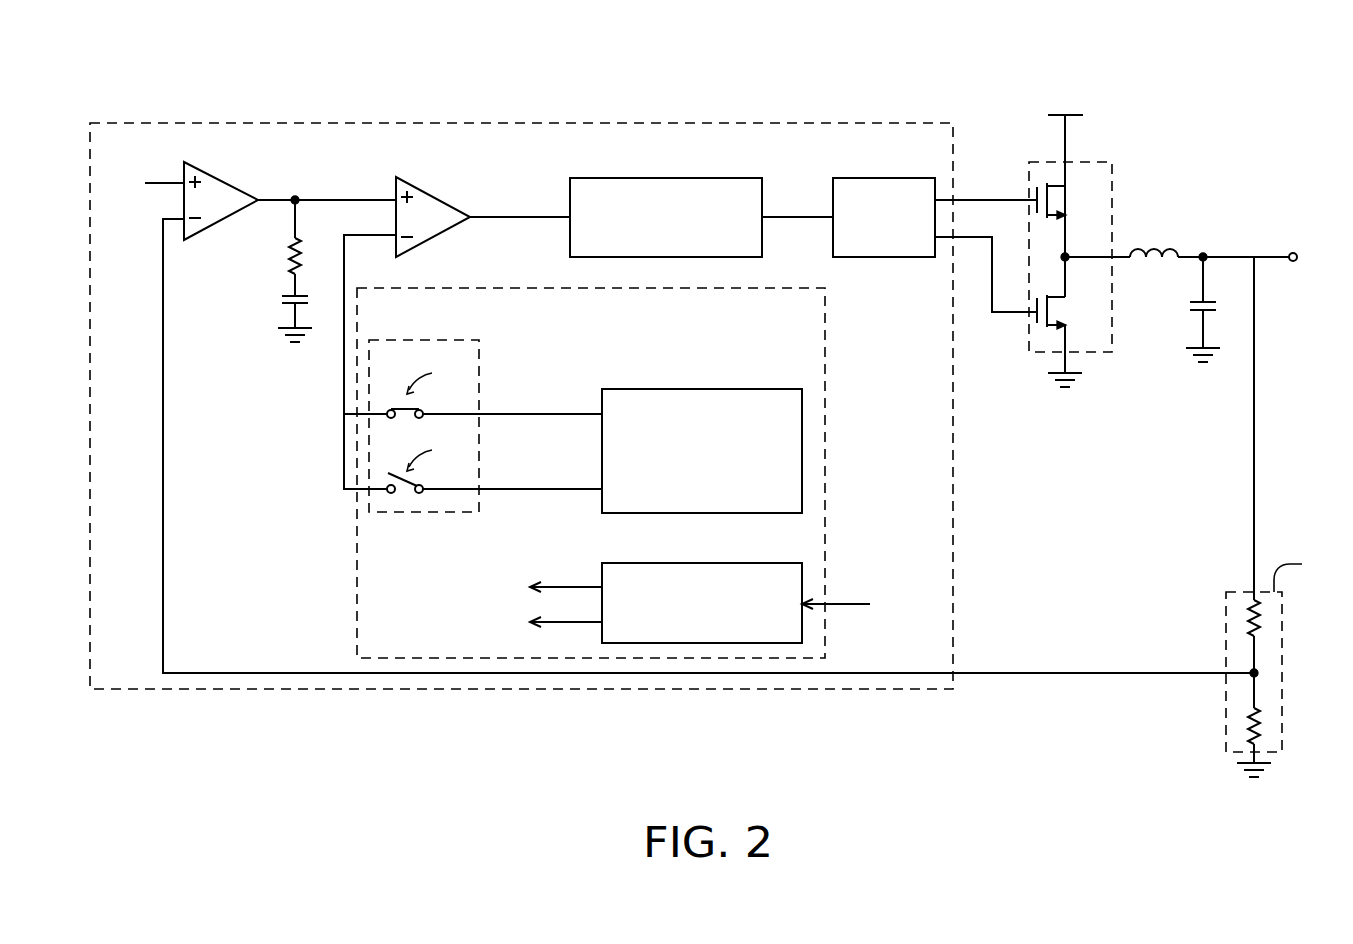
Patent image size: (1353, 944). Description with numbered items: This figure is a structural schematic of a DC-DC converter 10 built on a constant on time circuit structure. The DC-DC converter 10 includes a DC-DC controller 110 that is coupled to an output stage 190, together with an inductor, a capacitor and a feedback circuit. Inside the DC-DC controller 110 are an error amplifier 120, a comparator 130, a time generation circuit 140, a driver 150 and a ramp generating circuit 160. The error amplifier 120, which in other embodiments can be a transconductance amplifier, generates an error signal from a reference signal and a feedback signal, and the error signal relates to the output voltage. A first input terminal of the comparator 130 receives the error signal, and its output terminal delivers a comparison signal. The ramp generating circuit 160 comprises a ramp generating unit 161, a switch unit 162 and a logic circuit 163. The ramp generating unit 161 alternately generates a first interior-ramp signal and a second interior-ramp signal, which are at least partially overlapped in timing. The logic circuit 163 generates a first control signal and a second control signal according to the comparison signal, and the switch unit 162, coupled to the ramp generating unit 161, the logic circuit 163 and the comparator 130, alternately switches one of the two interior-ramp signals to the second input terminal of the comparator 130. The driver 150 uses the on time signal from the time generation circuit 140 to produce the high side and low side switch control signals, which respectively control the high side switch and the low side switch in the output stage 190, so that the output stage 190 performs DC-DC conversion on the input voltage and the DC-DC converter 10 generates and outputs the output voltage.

The DC-DC converter 10 is at (144, 788).
The DC-DC controller 110 is at (568, 123).
The error amplifier 120 is at (220, 180).
The comparator 130 is at (433, 196).
The time generation circuit 140 is at (688, 178).
The driver 150 is at (876, 178).
The ramp generating circuit 160 is at (825, 353).
The ramp generating unit 161 is at (688, 389).
The switch unit 162 is at (474, 340).
The logic circuit 163 is at (688, 563).
The output stage 190 is at (1113, 152).